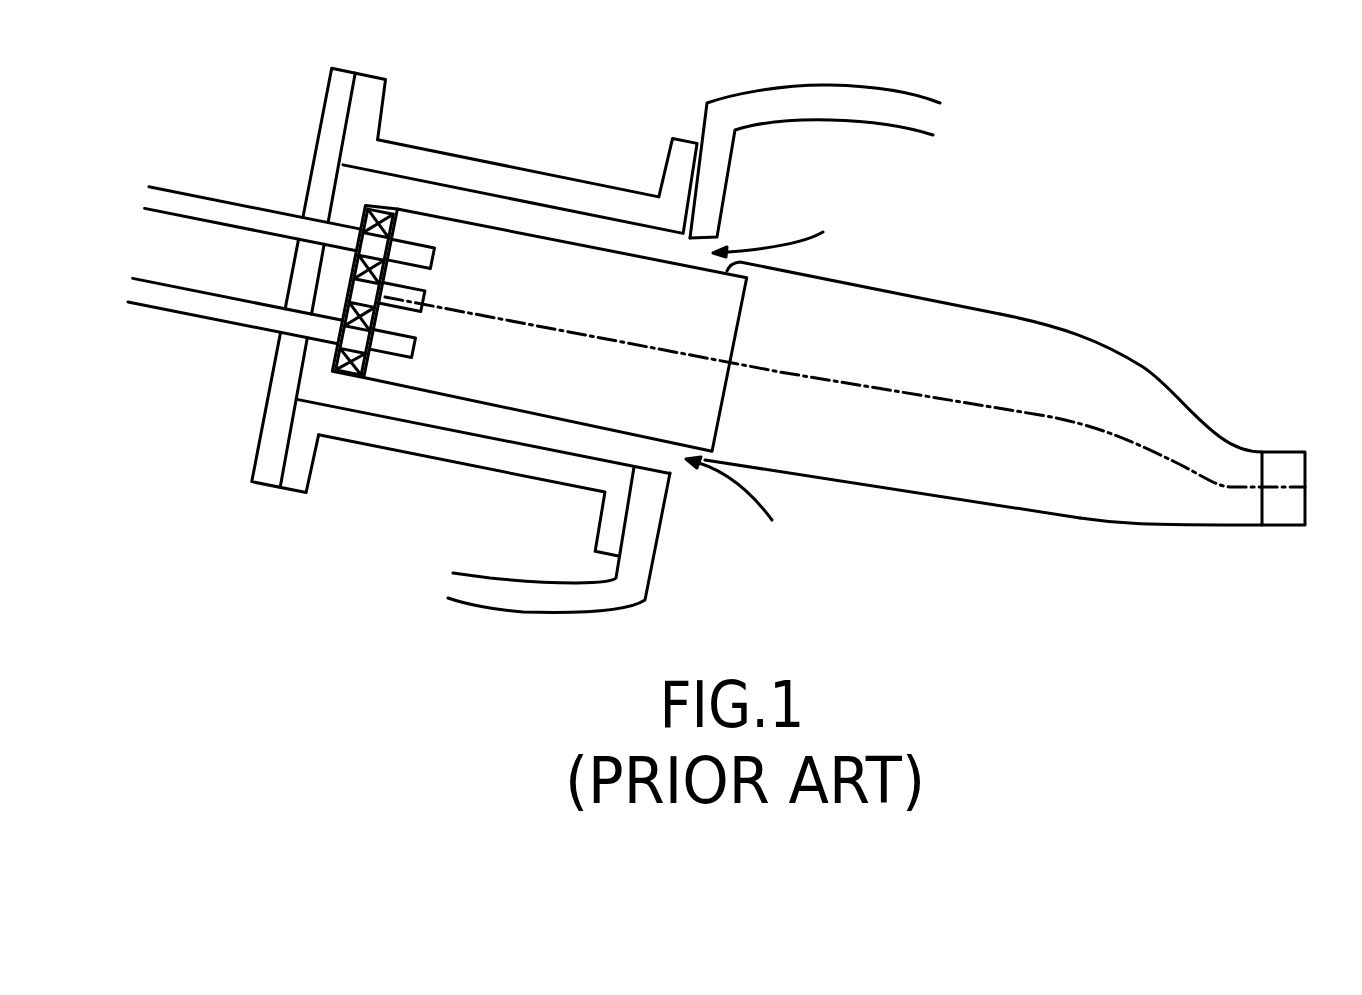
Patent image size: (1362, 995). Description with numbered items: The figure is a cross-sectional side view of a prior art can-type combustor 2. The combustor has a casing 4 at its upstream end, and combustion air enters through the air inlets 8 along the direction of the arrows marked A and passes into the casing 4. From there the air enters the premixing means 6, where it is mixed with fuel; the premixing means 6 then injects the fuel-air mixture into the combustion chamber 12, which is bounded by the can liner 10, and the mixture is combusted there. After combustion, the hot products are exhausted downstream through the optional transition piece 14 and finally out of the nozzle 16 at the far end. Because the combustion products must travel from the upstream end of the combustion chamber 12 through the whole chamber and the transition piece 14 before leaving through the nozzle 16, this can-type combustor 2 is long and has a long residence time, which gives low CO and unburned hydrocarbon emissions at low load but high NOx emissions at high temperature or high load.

The can-type combustor 2 is at (186, 111).
The casing 4 is at (547, 188).
The premixing means 6 is at (413, 210).
The air inlet 8 is at (703, 247).
The can liner 10 is at (827, 273).
The combustion chamber 12 is at (502, 390).
The transition piece 14 is at (1143, 367).
The nozzle 16 is at (1287, 462).